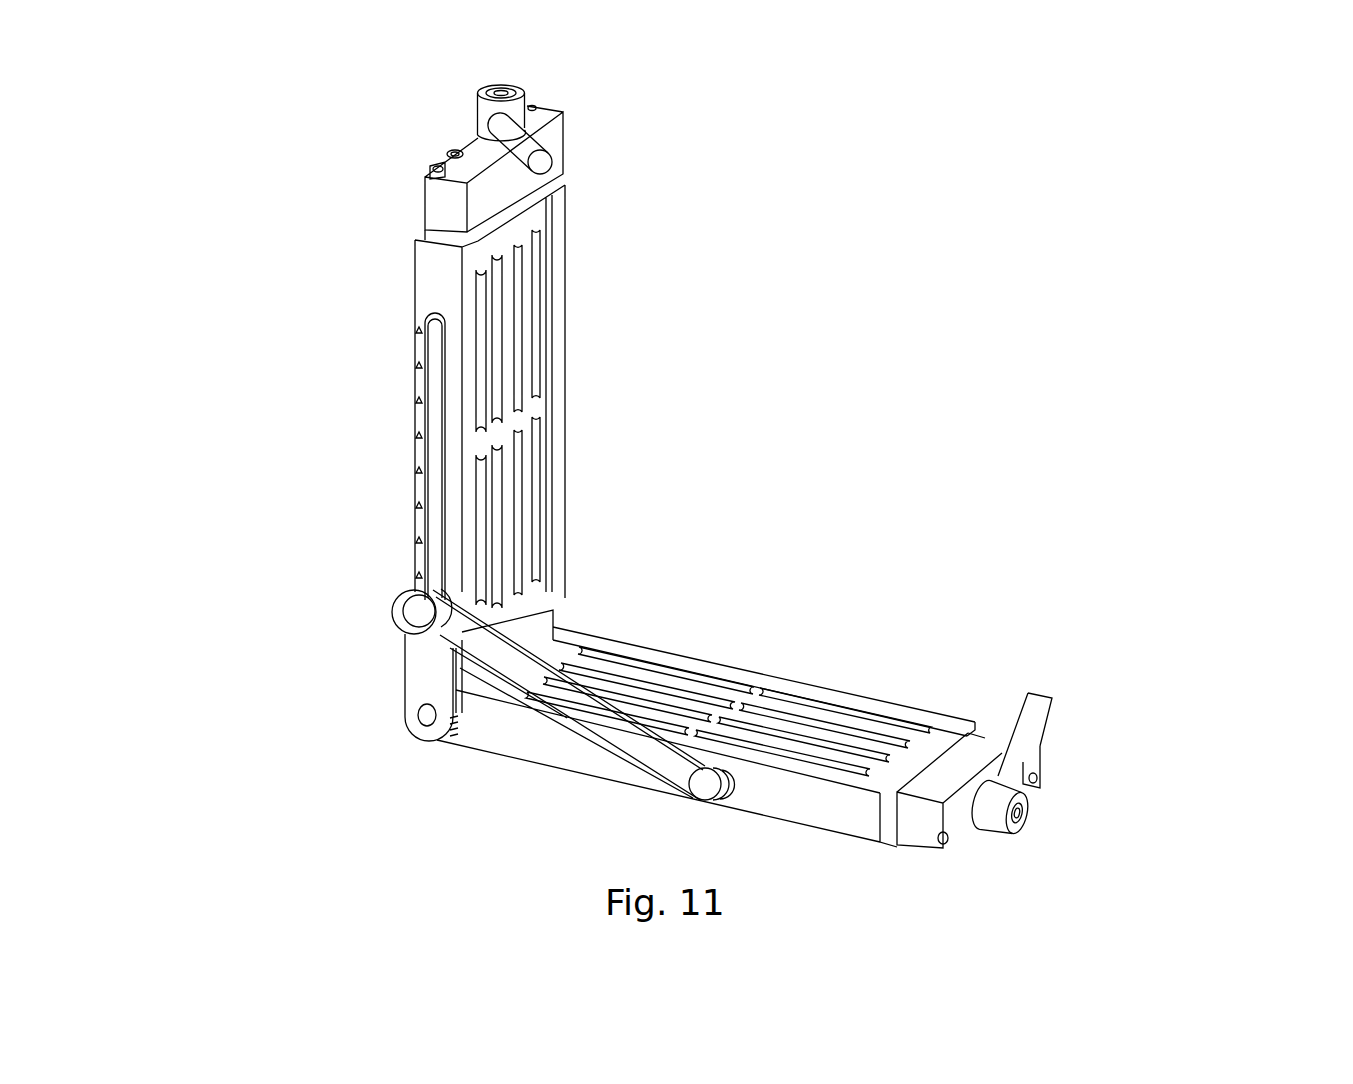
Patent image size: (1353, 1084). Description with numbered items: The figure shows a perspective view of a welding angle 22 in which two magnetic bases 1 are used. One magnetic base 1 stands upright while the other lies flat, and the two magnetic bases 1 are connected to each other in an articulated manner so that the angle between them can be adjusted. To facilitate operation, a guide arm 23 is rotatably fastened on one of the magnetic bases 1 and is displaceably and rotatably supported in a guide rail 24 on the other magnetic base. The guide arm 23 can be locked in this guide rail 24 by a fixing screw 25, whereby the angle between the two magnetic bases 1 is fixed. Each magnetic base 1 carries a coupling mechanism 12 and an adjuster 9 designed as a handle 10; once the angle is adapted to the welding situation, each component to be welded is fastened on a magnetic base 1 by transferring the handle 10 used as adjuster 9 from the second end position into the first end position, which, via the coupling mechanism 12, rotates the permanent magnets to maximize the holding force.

The magnetic base 1 is at (430, 280).
The adjuster 9 is at (897, 463).
The handle 10 is at (530, 143).
The coupling mechanism 12 is at (450, 196).
The welding angle 22 is at (781, 495).
The guide arm 23 is at (517, 660).
The guide rail 24 is at (432, 378).
The fixing screw 25 is at (413, 617).